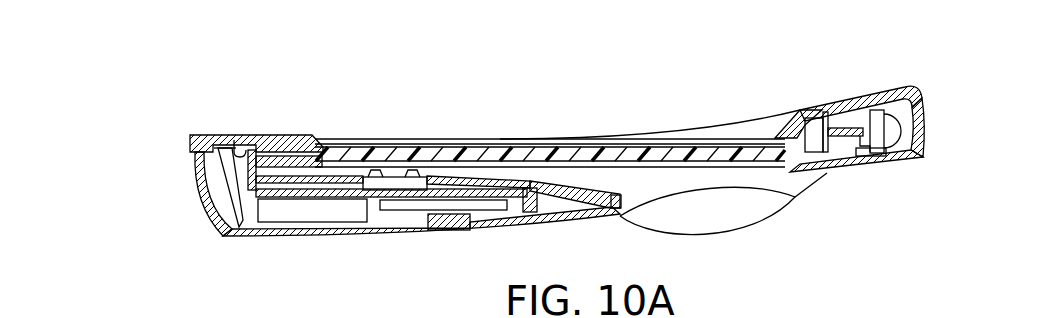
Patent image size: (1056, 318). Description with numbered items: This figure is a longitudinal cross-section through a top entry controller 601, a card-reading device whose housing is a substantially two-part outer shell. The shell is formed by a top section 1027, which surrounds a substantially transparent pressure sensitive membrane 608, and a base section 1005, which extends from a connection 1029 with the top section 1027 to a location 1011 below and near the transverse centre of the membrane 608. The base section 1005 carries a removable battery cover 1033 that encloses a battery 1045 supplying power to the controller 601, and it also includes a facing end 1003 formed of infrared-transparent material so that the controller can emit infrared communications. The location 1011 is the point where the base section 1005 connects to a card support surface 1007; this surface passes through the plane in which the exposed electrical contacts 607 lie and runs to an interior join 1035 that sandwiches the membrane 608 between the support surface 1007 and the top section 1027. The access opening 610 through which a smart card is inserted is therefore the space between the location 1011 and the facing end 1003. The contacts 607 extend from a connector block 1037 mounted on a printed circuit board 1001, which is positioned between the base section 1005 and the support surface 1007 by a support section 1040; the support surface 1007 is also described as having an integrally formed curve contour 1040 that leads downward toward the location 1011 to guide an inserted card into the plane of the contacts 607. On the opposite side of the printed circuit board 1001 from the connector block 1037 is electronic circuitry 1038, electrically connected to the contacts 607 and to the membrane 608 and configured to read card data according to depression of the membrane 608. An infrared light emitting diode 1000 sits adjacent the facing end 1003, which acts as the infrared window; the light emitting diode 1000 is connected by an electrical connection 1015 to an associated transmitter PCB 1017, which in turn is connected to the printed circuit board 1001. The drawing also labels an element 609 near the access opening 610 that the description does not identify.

The top entry controller 601 is at (997, 77).
The exposed electrical contacts 607 is at (376, 169).
The pressure sensitive membrane 608 is at (596, 143).
The light path 609 is at (751, 229).
The access opening 610 is at (798, 203).
The infrared light emitting diode 1000 is at (900, 112).
The printed circuit board 1001 is at (253, 204).
The facing end 1003 is at (919, 124).
The base section 1005 is at (453, 234).
The card support surface 1007 is at (489, 175).
The location 1011 is at (620, 217).
The electrical connection 1015 is at (858, 152).
The transmitter PCB 1017 is at (855, 125).
The top section 1027 is at (826, 102).
The connection 1029 is at (186, 147).
The removable battery cover 1033 is at (199, 183).
The interior join 1035 is at (244, 151).
The connector block 1037 is at (366, 176).
The electronic circuitry 1038 is at (412, 204).
The support section 1040 is at (226, 203).
The battery 1045 is at (317, 214).